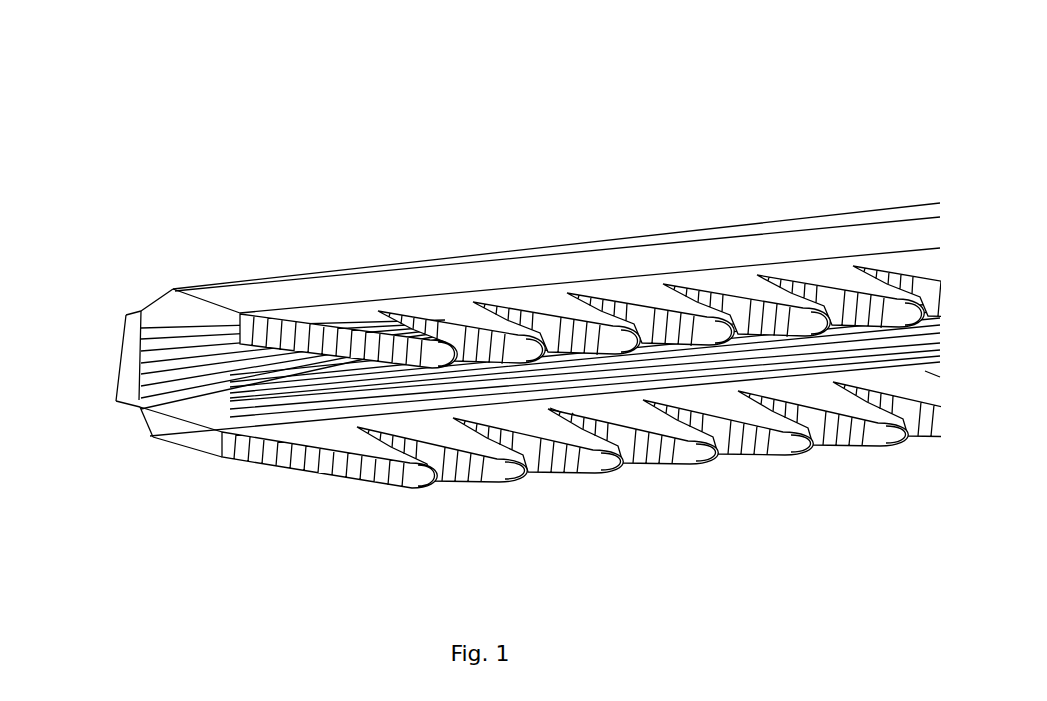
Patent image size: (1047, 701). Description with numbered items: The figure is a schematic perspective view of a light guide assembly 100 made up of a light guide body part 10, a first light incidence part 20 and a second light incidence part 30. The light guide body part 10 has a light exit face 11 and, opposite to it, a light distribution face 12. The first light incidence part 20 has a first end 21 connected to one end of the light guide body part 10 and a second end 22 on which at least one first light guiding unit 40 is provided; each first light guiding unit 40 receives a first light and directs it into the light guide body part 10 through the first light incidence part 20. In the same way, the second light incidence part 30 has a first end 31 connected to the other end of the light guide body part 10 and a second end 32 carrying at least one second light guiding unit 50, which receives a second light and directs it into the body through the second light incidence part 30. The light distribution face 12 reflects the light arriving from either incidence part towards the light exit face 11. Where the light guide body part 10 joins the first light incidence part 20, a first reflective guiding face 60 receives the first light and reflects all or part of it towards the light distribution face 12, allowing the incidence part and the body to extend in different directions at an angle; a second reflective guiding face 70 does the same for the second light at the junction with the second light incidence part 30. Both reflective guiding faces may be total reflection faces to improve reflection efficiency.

The light guide assembly 100 is at (503, 93).
The light guide body part 10 is at (93, 320).
The light exit face 11 is at (135, 310).
The light distribution face 12 is at (137, 390).
The first light incidence part 20 is at (452, 280).
The first end 21 is at (312, 273).
The second end 22 is at (610, 328).
The second light incidence part 30 is at (313, 410).
The first end 31 is at (170, 442).
The second end 32 is at (417, 477).
The first light guiding unit 40 is at (763, 295).
The second light guiding unit 50 is at (647, 418).
The first reflective guiding face 60 is at (160, 300).
The second reflective guiding face 70 is at (145, 423).